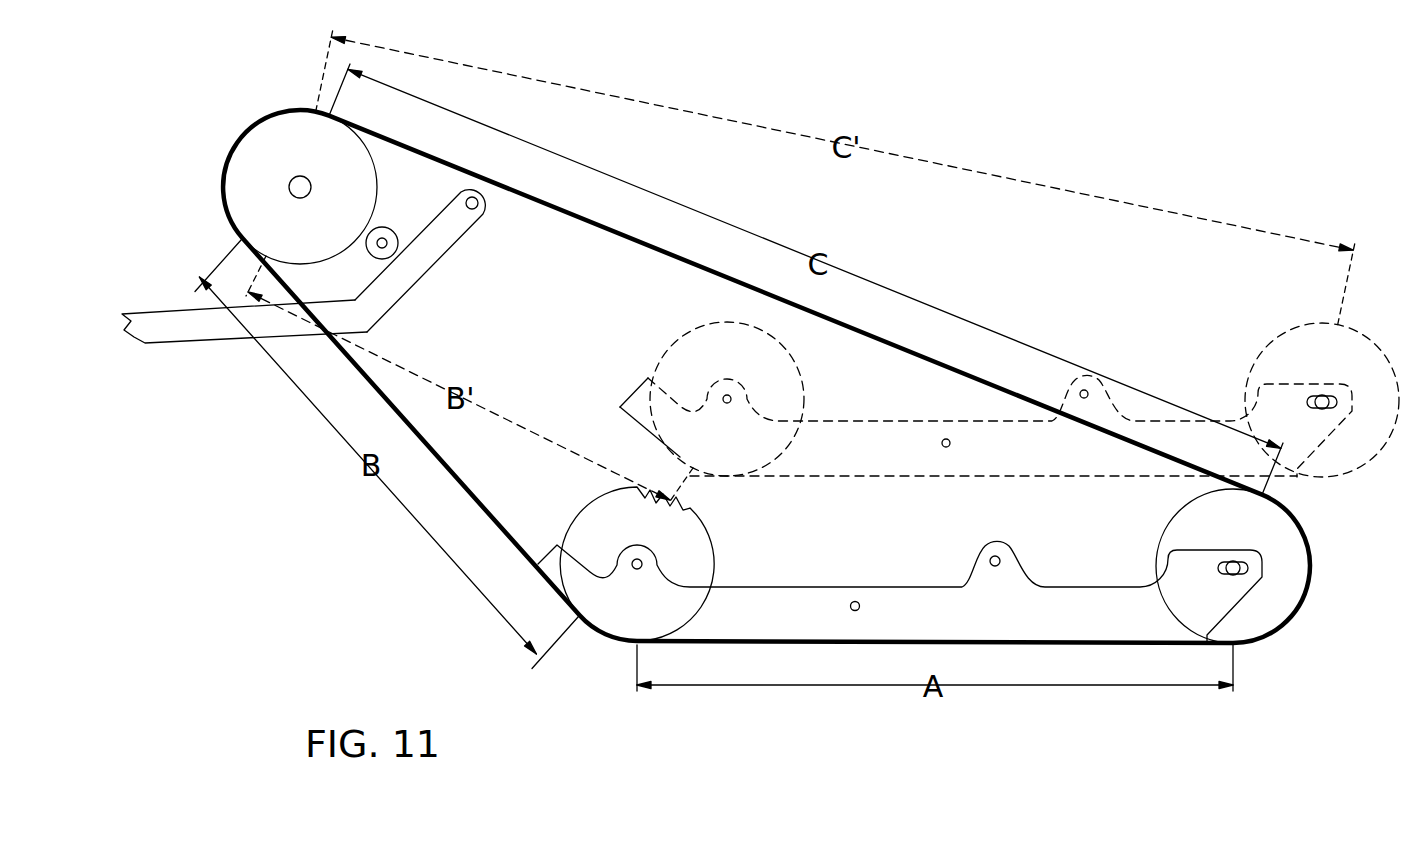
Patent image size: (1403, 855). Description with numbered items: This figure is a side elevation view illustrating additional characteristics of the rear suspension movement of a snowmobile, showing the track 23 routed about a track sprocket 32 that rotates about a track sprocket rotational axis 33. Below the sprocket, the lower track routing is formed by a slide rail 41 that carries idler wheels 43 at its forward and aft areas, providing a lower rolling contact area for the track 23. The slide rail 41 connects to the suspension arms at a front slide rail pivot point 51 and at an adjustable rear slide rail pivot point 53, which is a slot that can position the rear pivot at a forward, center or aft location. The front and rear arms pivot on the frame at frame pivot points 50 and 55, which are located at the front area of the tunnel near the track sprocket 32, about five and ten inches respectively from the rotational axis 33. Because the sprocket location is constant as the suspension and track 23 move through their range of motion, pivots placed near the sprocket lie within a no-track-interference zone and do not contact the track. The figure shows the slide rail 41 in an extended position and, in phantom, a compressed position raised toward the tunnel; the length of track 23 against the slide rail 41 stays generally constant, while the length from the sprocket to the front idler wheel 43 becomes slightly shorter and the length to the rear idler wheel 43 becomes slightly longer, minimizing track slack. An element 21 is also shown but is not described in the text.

The feed tray 21 is at (217, 328).
The track 23 is at (467, 492).
The track sprocket 32 is at (248, 187).
The track sprocket rotational axis 33 is at (301, 176).
The slide rail 41 is at (775, 607).
The idler wheel 43 is at (625, 613).
The frame pivot point 50 is at (383, 240).
The front slide rail pivot point 51 is at (852, 603).
The adjustable rear slide rail pivot point 53 is at (998, 561).
The frame pivot point 55 is at (472, 210).